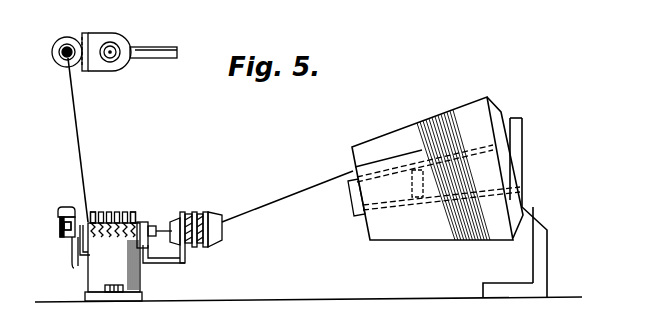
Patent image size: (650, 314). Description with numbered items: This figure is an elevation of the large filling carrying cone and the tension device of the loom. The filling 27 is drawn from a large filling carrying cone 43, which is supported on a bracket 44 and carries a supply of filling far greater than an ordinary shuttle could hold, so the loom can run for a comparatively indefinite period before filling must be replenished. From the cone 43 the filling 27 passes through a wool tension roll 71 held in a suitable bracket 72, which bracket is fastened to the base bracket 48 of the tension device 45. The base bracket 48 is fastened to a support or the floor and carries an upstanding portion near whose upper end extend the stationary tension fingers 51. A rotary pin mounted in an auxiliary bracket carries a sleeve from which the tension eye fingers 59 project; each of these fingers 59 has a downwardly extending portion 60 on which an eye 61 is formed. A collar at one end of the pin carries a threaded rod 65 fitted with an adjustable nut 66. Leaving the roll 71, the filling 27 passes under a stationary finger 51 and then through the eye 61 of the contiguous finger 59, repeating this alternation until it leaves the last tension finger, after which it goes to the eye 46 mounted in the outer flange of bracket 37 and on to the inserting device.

The filling 27 is at (74, 115).
The bracket 37 is at (65, 34).
The filling carrying cone 43 is at (465, 105).
The bracket 44 is at (547, 253).
The tension device 45 is at (108, 204).
The eye 46 is at (61, 61).
The base bracket 48 is at (142, 295).
The stationary tension fingers 51 is at (124, 246).
The tension eye fingers 59 is at (96, 212).
The downwardly extending portion 60 is at (85, 256).
The eye 61 is at (131, 222).
The threaded rod 65 is at (65, 207).
The adjustable nut 66 is at (59, 219).
The wool tension roll 71 is at (219, 212).
The bracket 72 is at (185, 262).